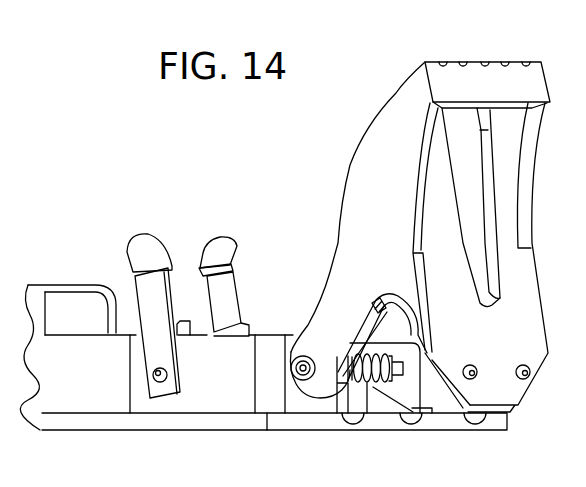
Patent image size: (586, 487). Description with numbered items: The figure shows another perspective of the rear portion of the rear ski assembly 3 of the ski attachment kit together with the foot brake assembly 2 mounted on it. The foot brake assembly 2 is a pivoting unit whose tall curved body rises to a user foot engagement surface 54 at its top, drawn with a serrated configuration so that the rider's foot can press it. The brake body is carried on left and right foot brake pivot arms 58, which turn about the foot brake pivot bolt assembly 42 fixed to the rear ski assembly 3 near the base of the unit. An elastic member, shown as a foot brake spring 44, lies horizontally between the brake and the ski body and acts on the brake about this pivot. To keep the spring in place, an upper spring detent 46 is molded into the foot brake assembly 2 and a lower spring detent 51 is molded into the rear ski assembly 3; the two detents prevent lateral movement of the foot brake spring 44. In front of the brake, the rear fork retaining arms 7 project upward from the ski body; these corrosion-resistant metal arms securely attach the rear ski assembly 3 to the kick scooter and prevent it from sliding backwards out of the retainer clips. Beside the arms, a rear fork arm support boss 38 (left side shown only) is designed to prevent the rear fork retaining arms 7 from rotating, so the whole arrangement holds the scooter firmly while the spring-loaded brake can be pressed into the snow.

The foot brake assembly 2 is at (332, 169).
The rear ski assembly 3 is at (138, 173).
The rear fork retaining arms 7 is at (183, 236).
The rear fork arm support boss 38 is at (143, 405).
The foot brake pivot bolt assembly 42 is at (295, 383).
The foot brake spring 44 is at (371, 390).
The upper spring detent 46 is at (377, 310).
The lower spring detent 51 is at (429, 410).
The user foot engagement surface 54 is at (498, 47).
The foot brake pivot arms 58 is at (314, 312).